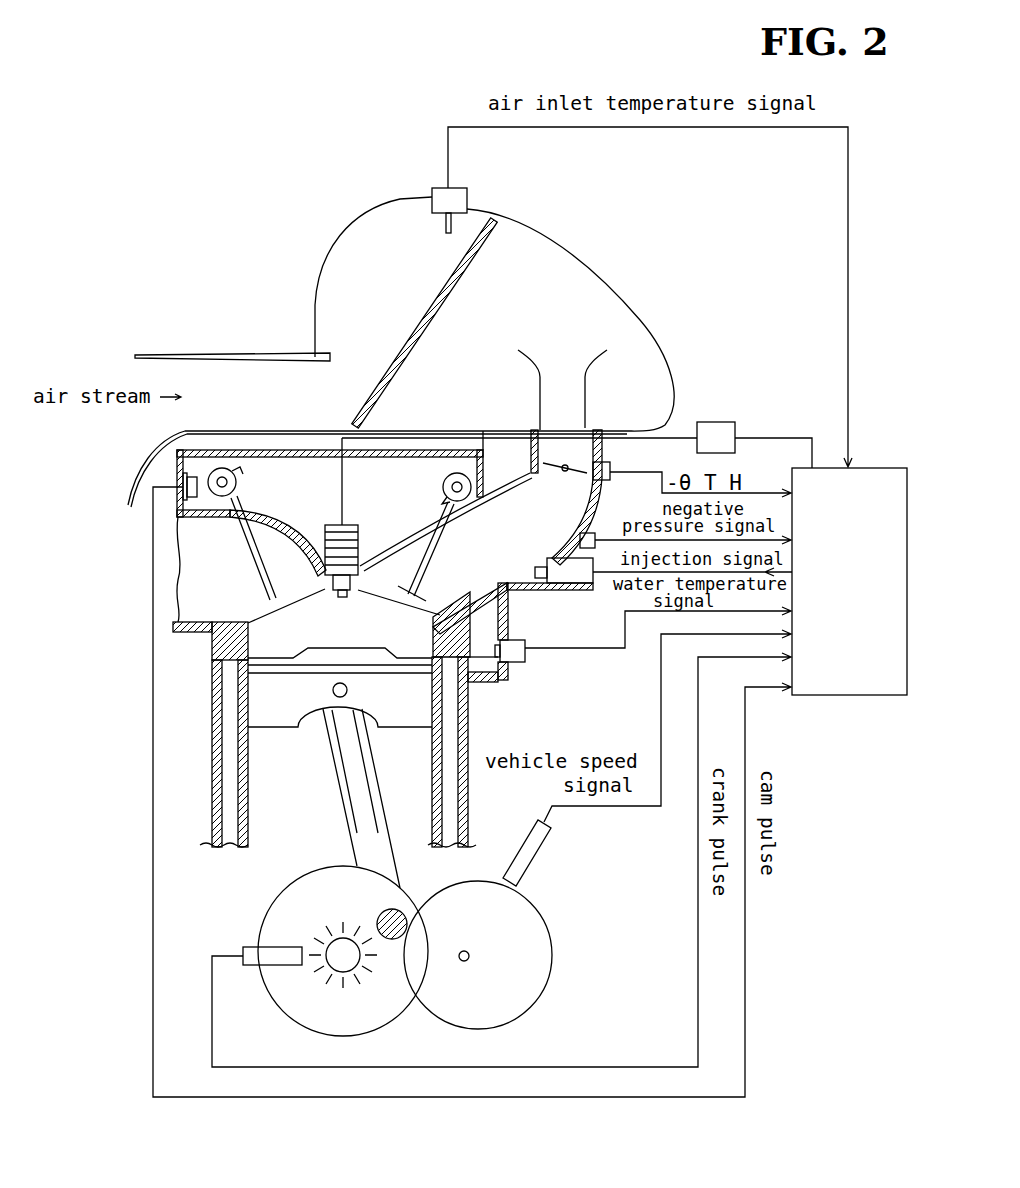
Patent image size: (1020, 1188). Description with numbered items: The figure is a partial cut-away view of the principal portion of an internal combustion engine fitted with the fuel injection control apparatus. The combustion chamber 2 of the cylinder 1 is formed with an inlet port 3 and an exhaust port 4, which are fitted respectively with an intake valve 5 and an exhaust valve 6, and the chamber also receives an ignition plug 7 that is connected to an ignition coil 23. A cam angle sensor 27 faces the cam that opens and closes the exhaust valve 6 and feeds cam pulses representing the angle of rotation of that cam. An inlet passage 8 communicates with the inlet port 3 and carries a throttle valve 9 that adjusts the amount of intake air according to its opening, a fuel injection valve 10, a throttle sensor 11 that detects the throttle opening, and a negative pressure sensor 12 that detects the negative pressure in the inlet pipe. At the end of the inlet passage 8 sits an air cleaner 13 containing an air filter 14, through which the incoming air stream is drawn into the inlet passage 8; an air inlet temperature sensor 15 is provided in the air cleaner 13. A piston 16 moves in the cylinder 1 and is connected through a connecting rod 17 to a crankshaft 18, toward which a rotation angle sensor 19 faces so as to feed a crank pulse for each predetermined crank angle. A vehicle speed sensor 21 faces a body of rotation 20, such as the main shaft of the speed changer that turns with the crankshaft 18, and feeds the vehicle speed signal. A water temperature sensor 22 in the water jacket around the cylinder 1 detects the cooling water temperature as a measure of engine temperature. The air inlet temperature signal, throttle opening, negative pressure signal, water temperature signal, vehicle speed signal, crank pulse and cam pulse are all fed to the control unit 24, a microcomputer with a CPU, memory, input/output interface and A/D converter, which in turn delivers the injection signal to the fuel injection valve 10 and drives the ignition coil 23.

The cylinder 1 is at (191, 717).
The combustion chamber 2 is at (260, 634).
The inlet port 3 is at (497, 612).
The exhaust port 4 is at (230, 608).
The intake valve 5 is at (427, 577).
The exhaust valve 6 is at (273, 603).
The ignition plug 7 is at (355, 525).
The inlet passage 8 is at (527, 515).
The throttle valve 9 is at (580, 466).
The fuel injection valve 10 is at (597, 582).
The throttle sensor 11 is at (620, 428).
The negative pressure sensor 12 is at (606, 532).
The air cleaner 13 is at (573, 258).
The air filter 14 is at (468, 266).
The air inlet temperature sensor 15 is at (467, 196).
The piston 16 is at (275, 727).
The connecting rod 17 is at (350, 768).
The crankshaft 18 is at (340, 962).
The rotation angle sensor 19 is at (258, 946).
The body of rotation 20 is at (532, 927).
The vehicle speed sensor 21 is at (530, 866).
The water temperature sensor 22 is at (522, 662).
The ignition coil 23 is at (717, 422).
The control unit 24 is at (845, 696).
The cam angle sensor 27 is at (181, 492).